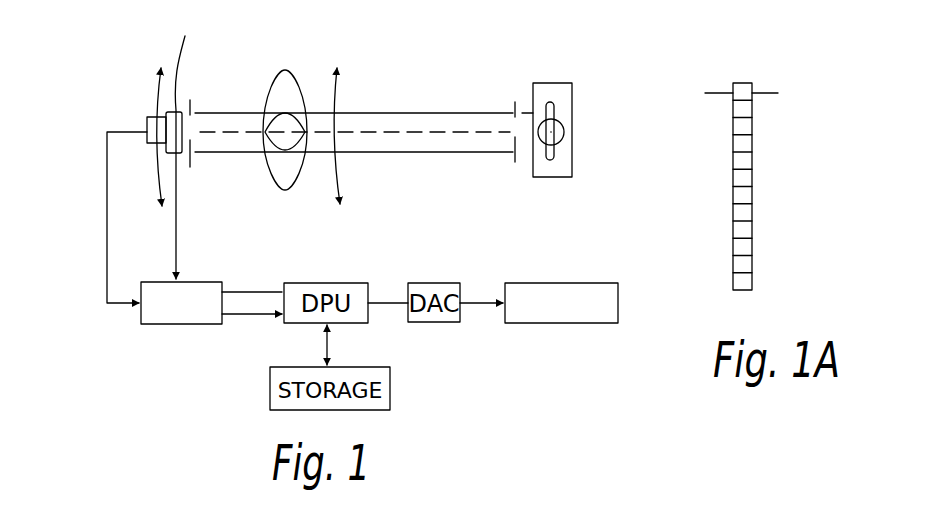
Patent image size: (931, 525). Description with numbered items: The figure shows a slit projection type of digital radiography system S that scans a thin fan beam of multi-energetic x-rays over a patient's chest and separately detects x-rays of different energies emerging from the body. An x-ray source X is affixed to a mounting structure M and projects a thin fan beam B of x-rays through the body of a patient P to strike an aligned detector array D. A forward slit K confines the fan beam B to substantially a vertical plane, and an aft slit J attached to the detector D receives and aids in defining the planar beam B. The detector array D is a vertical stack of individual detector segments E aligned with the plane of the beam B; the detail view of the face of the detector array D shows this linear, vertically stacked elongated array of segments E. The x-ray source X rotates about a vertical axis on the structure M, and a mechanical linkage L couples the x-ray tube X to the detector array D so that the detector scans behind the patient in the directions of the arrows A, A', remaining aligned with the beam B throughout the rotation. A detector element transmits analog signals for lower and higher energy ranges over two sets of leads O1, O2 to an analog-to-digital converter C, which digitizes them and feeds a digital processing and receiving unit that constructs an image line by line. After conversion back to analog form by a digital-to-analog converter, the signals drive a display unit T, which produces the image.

In FIG. 1, the lead set O1 is at (107, 207).
In FIG. 1A, the lead set O1 is at (713, 92).
In FIG. 1, the lead set O2 is at (176, 230).
In FIG. 1A, the lead set O2 is at (767, 97).
In FIG. 1, the arrow A' is at (130, 136).
In FIG. 1, the arrow A is at (338, 117).
In FIG. 1, the detector array D is at (182, 146).
In FIG. 1A, the detector array D is at (743, 83).
In FIG. 1, the aft slit J is at (196, 141).
In FIG. 1, the fan beam B is at (425, 135).
In FIG. 1, the patient P is at (281, 70).
In FIG. 1, the mechanical linkage L is at (403, 157).
In FIG. 1, the forward slit K is at (520, 97).
In FIG. 1, the mounting structure M is at (553, 83).
In FIG. 1, the x-ray source X is at (563, 131).
In FIG. 1, the system S is at (584, 164).
In FIG. 1, the analog-to-digital converter C is at (178, 325).
In FIG. 1, the display unit T is at (572, 282).
In FIG. 1A, the detector segments E is at (743, 183).